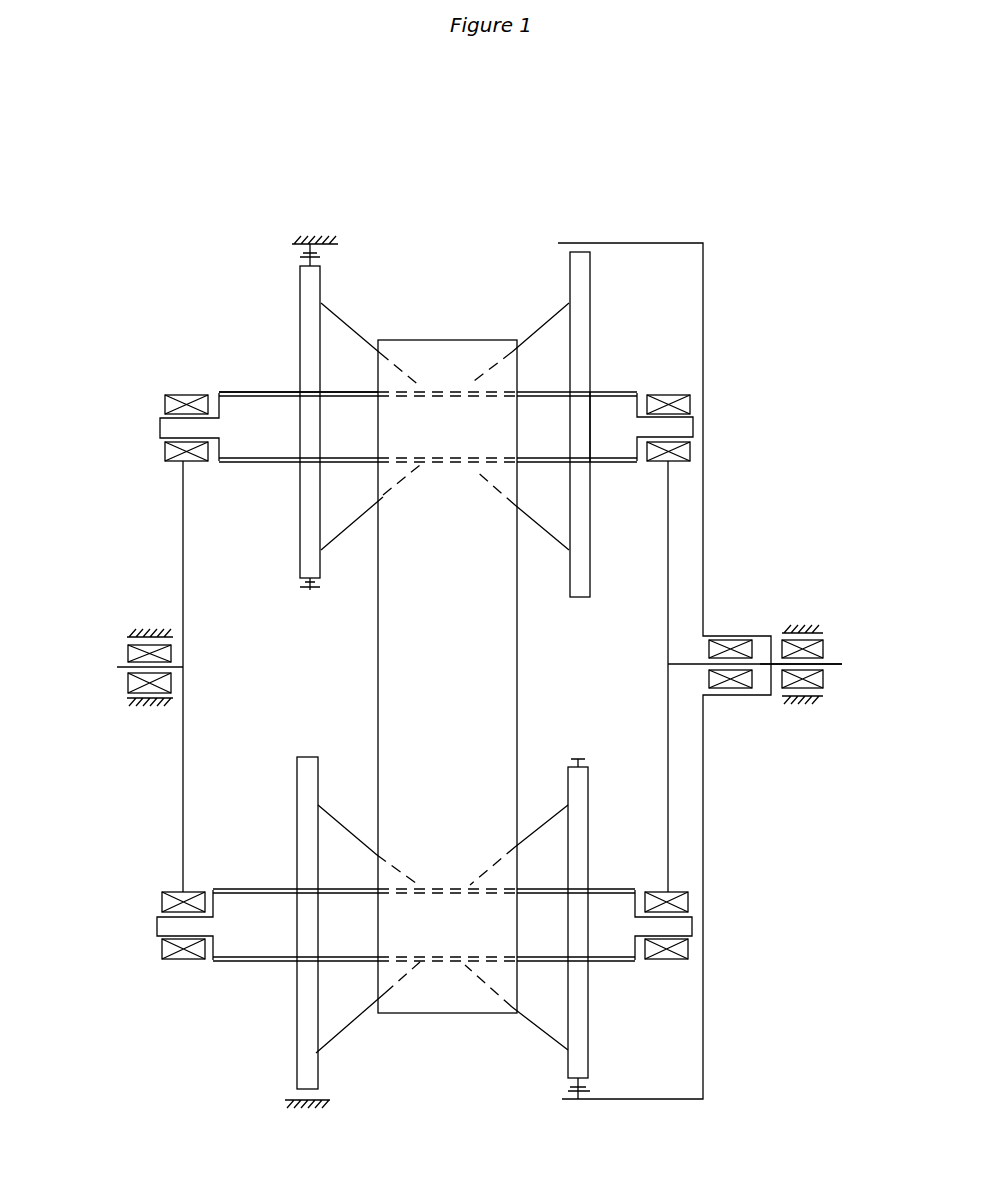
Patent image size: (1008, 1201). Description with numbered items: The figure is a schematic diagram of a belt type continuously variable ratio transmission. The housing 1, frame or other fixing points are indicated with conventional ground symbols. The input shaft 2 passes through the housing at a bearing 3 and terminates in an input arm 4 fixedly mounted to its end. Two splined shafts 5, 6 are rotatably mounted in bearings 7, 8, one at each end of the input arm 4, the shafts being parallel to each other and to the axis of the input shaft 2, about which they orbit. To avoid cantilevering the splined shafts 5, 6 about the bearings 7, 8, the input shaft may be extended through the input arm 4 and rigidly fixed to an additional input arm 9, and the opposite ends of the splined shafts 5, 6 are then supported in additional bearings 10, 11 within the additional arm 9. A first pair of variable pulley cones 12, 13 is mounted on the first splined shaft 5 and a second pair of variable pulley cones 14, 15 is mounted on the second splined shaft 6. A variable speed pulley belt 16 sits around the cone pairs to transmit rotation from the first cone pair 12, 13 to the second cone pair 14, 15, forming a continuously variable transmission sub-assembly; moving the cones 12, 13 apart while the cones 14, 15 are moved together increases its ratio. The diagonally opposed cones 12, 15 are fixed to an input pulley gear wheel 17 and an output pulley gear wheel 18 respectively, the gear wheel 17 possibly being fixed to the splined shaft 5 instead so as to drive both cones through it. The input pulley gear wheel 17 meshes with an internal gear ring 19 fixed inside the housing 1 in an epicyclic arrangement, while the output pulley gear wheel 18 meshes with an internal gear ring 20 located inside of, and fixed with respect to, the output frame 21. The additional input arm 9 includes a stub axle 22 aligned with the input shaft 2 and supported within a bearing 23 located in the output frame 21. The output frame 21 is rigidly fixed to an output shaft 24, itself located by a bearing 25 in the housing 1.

The housing 1 is at (317, 231).
The input shaft 2 is at (110, 672).
The bearing 3 is at (130, 682).
The input arm 4 is at (181, 808).
The first splined shaft 5 is at (241, 411).
The second splined shaft 6 is at (236, 960).
The bearing 7 is at (166, 405).
The bearing 8 is at (160, 952).
The additional input arm 9 is at (670, 538).
The additional bearing 10 is at (690, 396).
The additional bearing 11 is at (690, 947).
The variable pulley cone 12 is at (346, 390).
The variable pulley cone 13 is at (543, 380).
The variable pulley cone 14 is at (347, 976).
The variable pulley cone 15 is at (544, 972).
The variable speed pulley belt 16 is at (445, 980).
The input pulley gear wheel 17 is at (299, 331).
The output pulley gear wheel 18 is at (580, 997).
The internal gear ring 19 is at (330, 250).
The internal gear ring 20 is at (587, 1098).
The output frame 21 is at (705, 785).
The stub axle 22 is at (687, 661).
The bearing 23 is at (731, 681).
The output shaft 24 is at (833, 660).
The bearing 25 is at (819, 683).